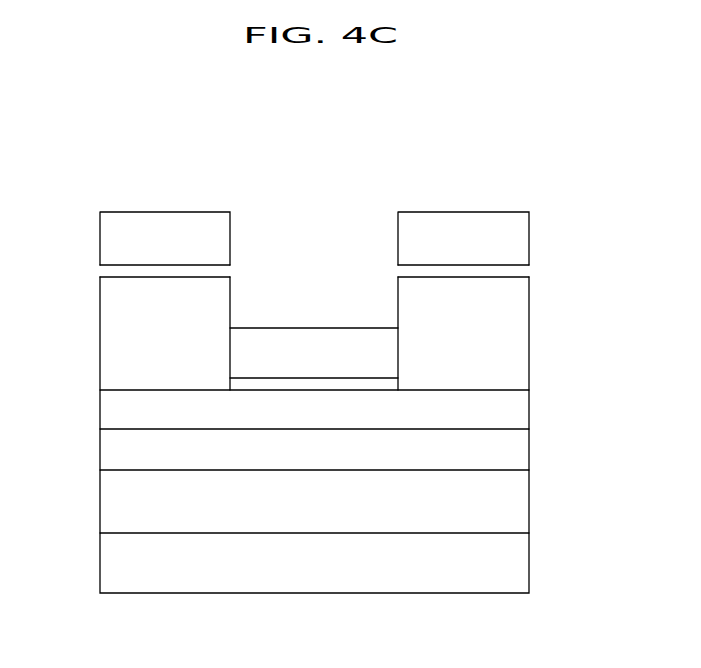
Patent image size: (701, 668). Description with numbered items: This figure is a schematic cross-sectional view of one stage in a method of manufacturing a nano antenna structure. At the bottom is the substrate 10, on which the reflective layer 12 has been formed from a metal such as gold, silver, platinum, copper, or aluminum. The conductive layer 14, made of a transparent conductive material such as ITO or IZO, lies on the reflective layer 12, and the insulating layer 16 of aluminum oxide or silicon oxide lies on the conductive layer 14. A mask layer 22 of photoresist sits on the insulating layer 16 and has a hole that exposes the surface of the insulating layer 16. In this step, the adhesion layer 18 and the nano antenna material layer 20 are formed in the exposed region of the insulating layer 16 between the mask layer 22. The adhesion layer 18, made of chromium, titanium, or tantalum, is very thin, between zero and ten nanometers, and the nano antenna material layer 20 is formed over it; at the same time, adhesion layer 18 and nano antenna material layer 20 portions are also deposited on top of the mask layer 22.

The substrate 10 is at (520, 565).
The reflective layer 12 is at (520, 503).
The conductive layer 14 is at (520, 450).
The insulating layer 16 is at (520, 412).
The adhesion layer 18 is at (108, 275).
The nano antenna material layer 20 is at (108, 238).
The mask layer 22 is at (108, 343).